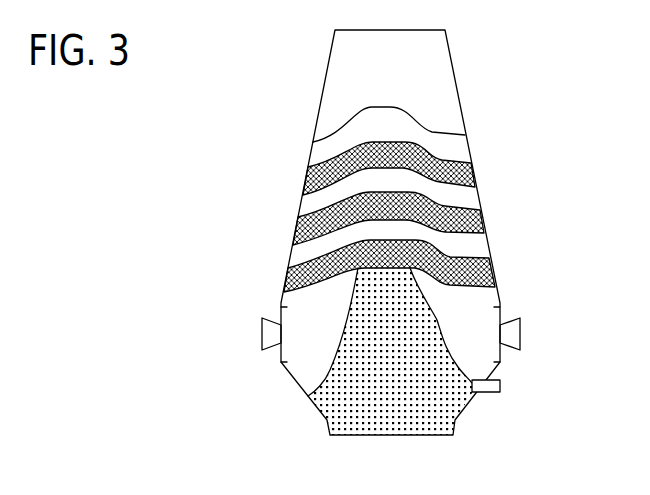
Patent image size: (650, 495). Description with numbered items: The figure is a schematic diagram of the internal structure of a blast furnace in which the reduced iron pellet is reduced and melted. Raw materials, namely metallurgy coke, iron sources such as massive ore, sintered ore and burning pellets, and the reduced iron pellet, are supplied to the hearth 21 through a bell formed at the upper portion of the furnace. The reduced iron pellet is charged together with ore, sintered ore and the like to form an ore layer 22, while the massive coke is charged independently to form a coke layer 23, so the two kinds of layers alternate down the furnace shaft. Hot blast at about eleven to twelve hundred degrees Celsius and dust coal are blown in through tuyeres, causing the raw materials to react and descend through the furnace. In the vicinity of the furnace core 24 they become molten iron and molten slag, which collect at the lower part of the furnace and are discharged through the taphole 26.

The hearth 21 is at (353, 92).
The ore layer 22 is at (305, 205).
The coke layer 23 is at (288, 277).
The furnace core 24 is at (327, 420).
The taphole 26 is at (502, 383).